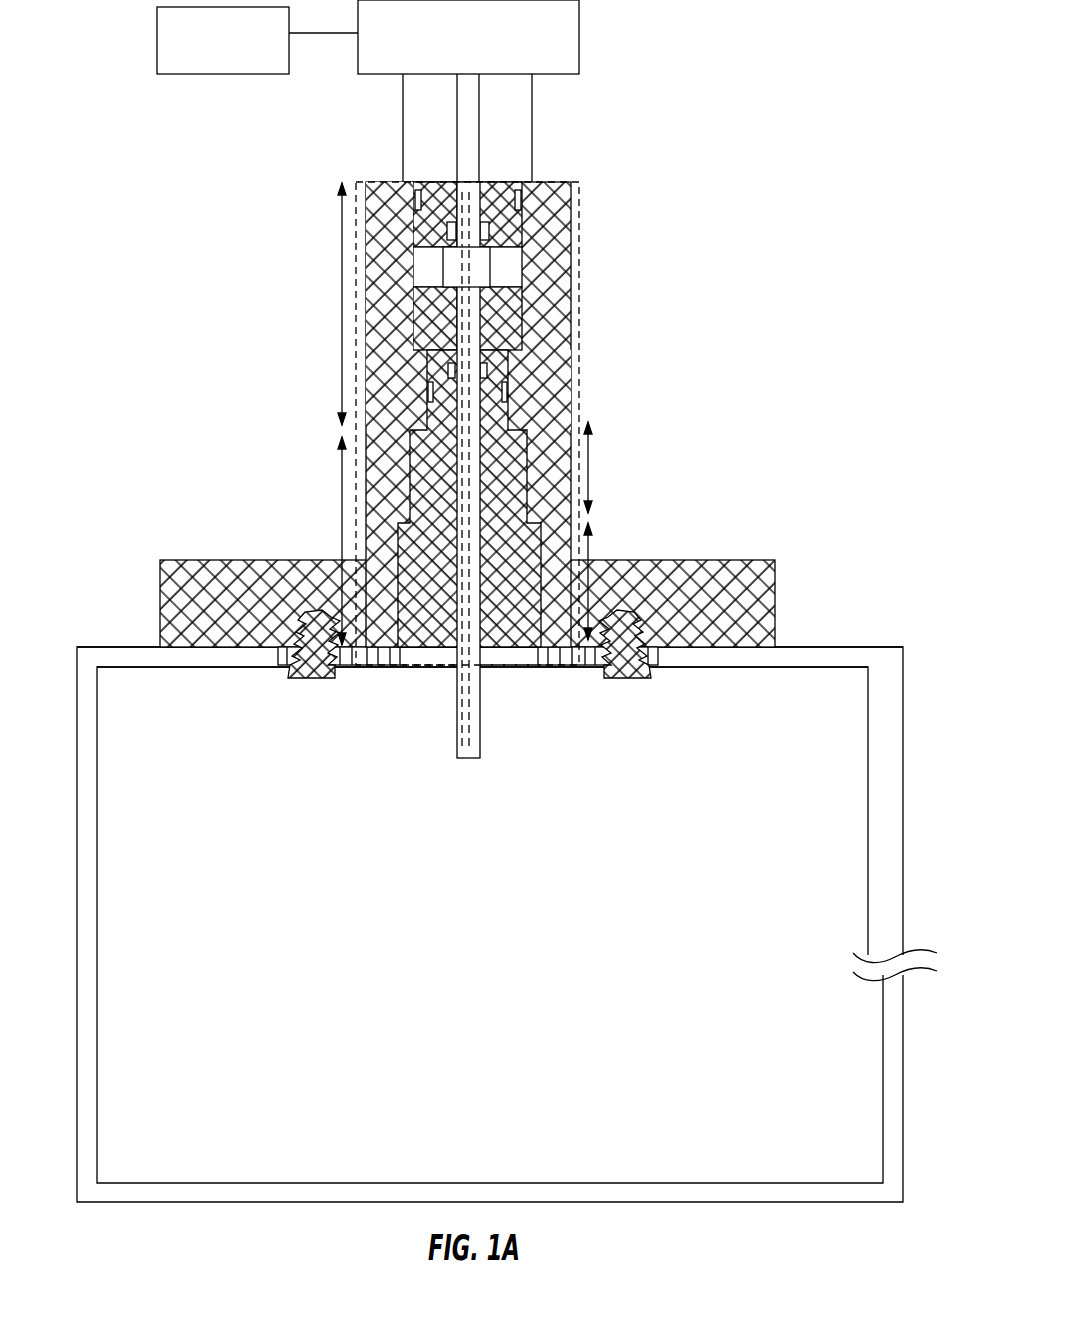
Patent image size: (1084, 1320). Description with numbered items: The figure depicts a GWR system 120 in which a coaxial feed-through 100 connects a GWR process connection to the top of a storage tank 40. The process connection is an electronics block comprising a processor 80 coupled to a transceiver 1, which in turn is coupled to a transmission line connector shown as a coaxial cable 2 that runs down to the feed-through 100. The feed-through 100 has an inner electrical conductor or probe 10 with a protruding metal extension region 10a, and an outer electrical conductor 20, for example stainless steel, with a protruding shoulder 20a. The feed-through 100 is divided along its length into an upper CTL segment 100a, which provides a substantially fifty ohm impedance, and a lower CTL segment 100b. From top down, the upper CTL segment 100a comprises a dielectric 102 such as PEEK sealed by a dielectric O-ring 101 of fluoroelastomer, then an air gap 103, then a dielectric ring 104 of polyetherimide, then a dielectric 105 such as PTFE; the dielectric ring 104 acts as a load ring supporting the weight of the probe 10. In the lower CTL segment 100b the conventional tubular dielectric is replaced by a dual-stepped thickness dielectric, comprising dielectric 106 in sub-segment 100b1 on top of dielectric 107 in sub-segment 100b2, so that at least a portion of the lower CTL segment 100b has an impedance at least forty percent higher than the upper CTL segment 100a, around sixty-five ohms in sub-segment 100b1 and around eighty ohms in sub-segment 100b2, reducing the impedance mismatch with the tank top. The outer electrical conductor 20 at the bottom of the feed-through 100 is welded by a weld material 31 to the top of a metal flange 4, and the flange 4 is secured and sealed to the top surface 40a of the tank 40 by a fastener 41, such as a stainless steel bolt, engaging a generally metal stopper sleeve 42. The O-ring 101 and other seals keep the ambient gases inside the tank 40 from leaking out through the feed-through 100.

The transceiver 1 is at (579, 37).
The coaxial cable 2 is at (532, 137).
The metal flange 4 is at (745, 570).
The inner electrical conductor (probe) 10 is at (463, 625).
The protruding metal extension region 10a is at (479, 265).
The outer electrical conductor 20 is at (547, 267).
The protruding shoulder 20a is at (533, 397).
The weld material 31 is at (572, 558).
The storage tank 40 is at (893, 1048).
The top surface of the tank 40a is at (833, 647).
The fastener 41 is at (627, 677).
The stopper sleeve 42 is at (595, 657).
The processor 80 is at (157, 53).
The coaxial feed-through 100 is at (580, 340).
The upper CTL segment 100a is at (342, 323).
The lower CTL segment 100b is at (466, 498).
The sub-segment 100b1 is at (590, 473).
The sub-segment 100b2 is at (590, 543).
The dielectric O-ring 101 is at (420, 196).
The dielectric 102 is at (447, 237).
The air gap 103 is at (422, 268).
The dielectric ring 104 is at (430, 313).
The dielectric 105 is at (428, 363).
The dielectric 106 is at (505, 478).
The dielectric 107 is at (500, 573).
The GWR system 120 is at (800, 126).